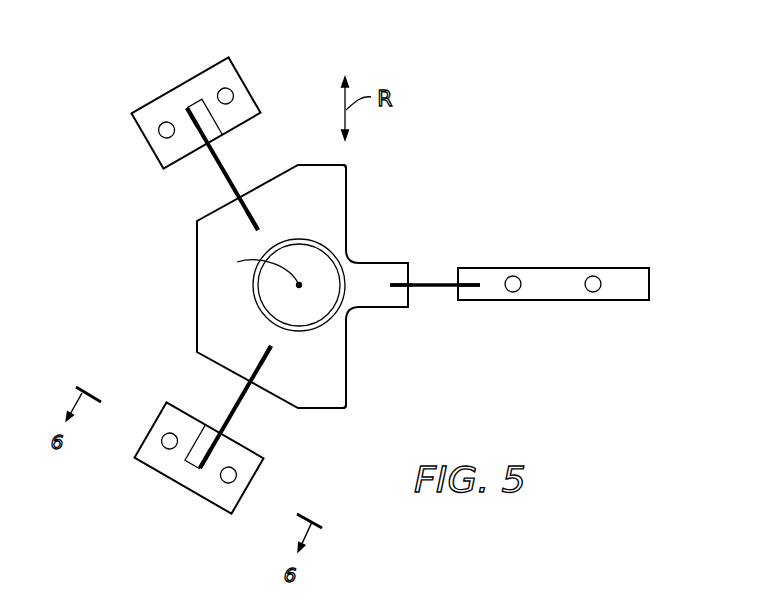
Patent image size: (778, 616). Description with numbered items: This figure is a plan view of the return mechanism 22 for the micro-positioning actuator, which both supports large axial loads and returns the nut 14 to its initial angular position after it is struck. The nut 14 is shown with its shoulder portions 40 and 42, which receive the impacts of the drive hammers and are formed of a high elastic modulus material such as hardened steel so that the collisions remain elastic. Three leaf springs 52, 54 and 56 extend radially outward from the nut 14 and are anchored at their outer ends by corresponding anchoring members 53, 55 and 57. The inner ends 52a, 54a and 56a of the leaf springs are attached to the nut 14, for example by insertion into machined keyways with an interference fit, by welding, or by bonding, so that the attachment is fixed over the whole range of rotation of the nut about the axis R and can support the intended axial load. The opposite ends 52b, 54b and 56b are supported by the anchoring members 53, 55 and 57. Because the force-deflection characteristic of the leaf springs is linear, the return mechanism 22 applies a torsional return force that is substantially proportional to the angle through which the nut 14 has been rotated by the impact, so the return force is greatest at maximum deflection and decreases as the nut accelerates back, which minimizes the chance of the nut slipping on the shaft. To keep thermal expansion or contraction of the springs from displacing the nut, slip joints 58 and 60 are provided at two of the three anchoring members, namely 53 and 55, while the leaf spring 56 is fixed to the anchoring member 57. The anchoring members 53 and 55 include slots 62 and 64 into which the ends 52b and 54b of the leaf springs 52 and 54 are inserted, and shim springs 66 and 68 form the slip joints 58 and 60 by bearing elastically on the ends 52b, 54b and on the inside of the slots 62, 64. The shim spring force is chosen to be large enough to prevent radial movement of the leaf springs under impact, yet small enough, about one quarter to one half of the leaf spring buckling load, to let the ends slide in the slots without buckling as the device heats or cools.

The nut 14 is at (196, 298).
The return mechanism 22 is at (133, 166).
The shoulder portion 40 is at (347, 387).
The shoulder portion 42 is at (347, 185).
The leaf spring 52 is at (242, 408).
The end of leaf spring 52a is at (270, 362).
The end of leaf spring 52b is at (207, 478).
The anchoring member 53 is at (268, 468).
The leaf spring 54 is at (222, 182).
The end of leaf spring 54a is at (258, 213).
The end of leaf spring 54b is at (182, 112).
The anchoring member 55 is at (139, 105).
The leaf spring 56 is at (442, 290).
The end of leaf spring 56a is at (396, 281).
The end of leaf spring 56b is at (466, 282).
The anchoring member 57 is at (625, 262).
The slip joint 58 is at (175, 459).
The slip joint 60 is at (208, 93).
The slot 62 is at (218, 425).
The slot 64 is at (217, 146).
The shim spring 66 is at (206, 446).
The shim spring 68 is at (215, 127).